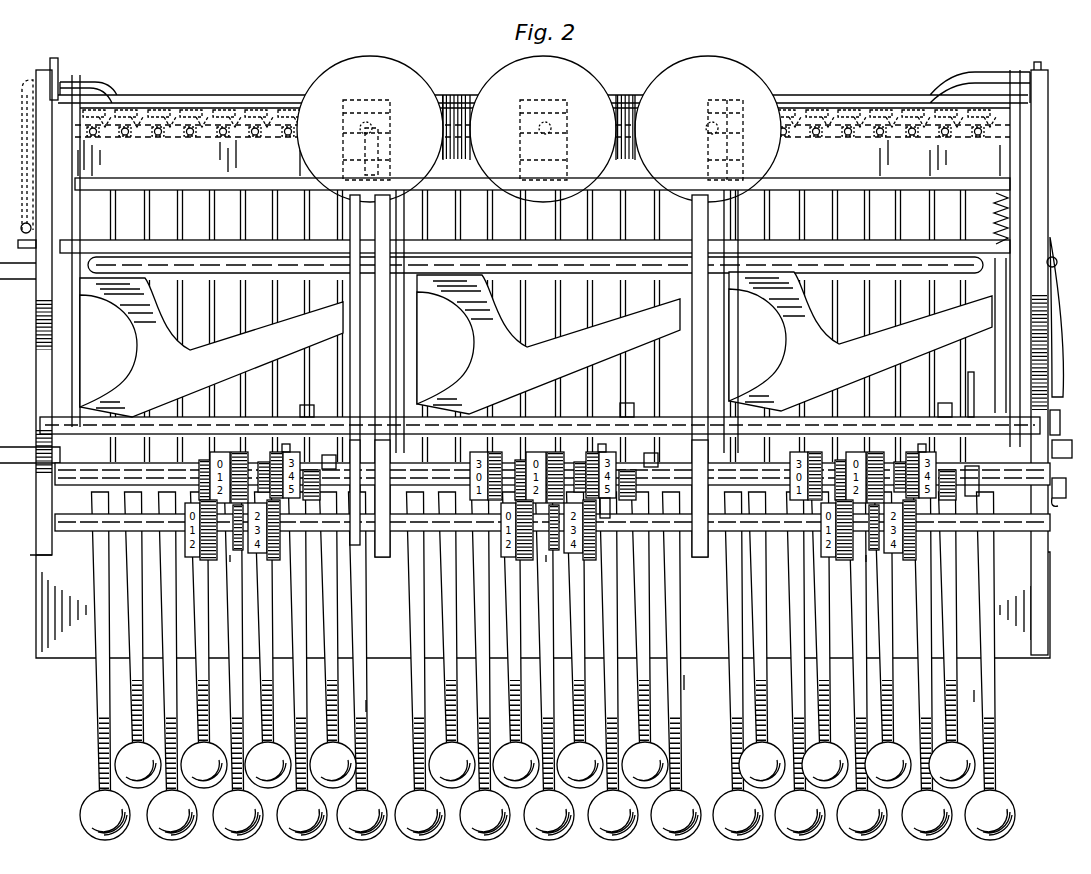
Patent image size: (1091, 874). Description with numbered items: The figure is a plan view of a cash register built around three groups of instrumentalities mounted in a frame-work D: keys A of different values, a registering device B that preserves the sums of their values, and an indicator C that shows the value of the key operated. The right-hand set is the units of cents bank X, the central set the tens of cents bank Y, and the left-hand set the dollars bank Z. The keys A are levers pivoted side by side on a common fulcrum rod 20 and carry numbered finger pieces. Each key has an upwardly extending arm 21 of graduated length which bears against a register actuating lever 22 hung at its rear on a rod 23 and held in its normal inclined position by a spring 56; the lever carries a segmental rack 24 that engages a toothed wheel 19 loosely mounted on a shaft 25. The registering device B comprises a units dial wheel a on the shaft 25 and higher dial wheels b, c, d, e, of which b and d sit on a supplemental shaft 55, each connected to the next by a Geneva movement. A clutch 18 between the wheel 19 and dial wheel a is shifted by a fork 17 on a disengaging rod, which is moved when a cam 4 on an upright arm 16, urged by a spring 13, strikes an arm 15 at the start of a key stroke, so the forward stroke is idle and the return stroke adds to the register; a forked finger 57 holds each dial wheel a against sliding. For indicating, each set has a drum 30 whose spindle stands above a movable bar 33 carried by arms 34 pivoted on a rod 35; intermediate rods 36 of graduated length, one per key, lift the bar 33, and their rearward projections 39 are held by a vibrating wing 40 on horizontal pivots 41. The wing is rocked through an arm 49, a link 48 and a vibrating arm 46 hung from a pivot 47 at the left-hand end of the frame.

The cam 4 is at (1066, 490).
The spring 13 is at (1062, 352).
The arm 15 is at (1059, 508).
The upright arm 16 is at (1062, 446).
The fork 17 is at (628, 492).
The clutch 18 is at (945, 470).
The toothed wheel 19 is at (975, 466).
The fulcrum rod 20 is at (1072, 453).
The upwardly extending arm 21 is at (538, 326).
The register actuating lever 22 is at (536, 344).
The rod 23 is at (535, 266).
The segmental rack 24 is at (990, 384).
The shaft 25 is at (1014, 470).
The indicator drum 30 is at (540, 204).
The movable bar 33 is at (542, 172).
The arms 34 is at (1010, 356).
The rod 35 is at (540, 418).
The intermediate rods 36 is at (908, 130).
The horizontal rearward projection 39 is at (542, 116).
The vibrating wing 40 is at (262, 95).
The horizontal pivots 41 is at (1041, 76).
The vibrating arm 46 is at (17, 244).
The pivot 47 is at (20, 228).
The link 48 is at (28, 117).
The arm 49 is at (58, 66).
The supplemental shaft 55 is at (722, 521).
The spring 56 is at (994, 208).
The forked finger 57 is at (612, 443).
The keys A is at (676, 696).
The registering device B is at (548, 560).
The indicator C is at (532, 111).
The frame-work D is at (28, 368).
The units of cents bank X is at (864, 666).
The tens of cents bank Y is at (548, 666).
The hundreds of cents or dollars bank Z is at (233, 666).
The units dial wheel a is at (597, 465).
The tens dial wheel b is at (582, 538).
The hundreds dial wheel c is at (541, 468).
The thousands dial wheel d is at (532, 538).
The tens of thousands dial wheel e is at (646, 469).